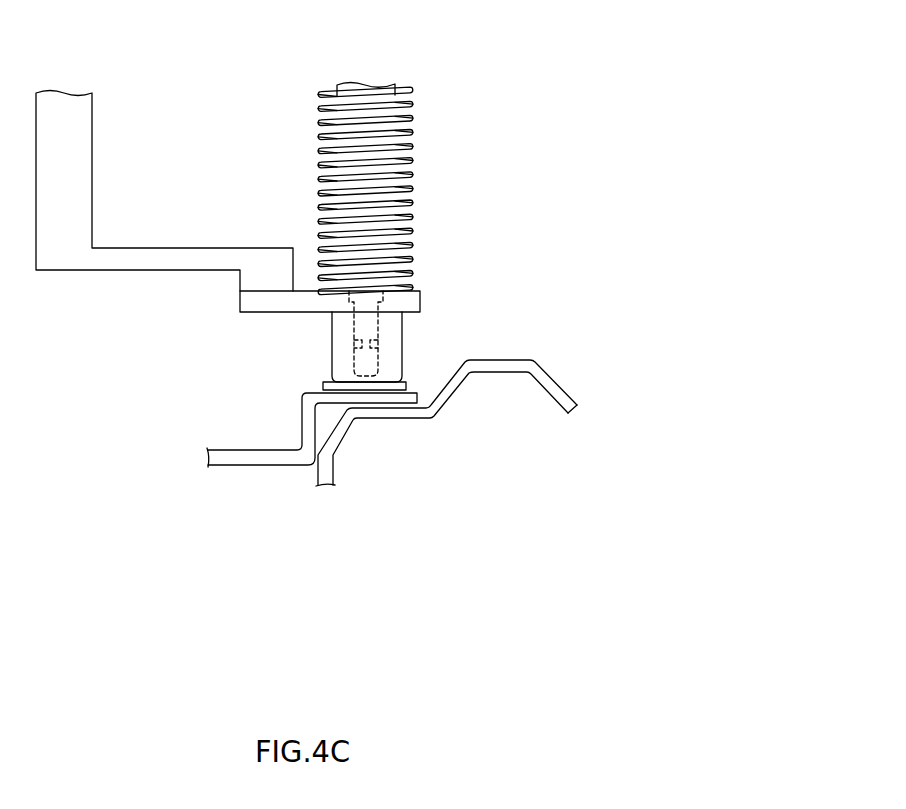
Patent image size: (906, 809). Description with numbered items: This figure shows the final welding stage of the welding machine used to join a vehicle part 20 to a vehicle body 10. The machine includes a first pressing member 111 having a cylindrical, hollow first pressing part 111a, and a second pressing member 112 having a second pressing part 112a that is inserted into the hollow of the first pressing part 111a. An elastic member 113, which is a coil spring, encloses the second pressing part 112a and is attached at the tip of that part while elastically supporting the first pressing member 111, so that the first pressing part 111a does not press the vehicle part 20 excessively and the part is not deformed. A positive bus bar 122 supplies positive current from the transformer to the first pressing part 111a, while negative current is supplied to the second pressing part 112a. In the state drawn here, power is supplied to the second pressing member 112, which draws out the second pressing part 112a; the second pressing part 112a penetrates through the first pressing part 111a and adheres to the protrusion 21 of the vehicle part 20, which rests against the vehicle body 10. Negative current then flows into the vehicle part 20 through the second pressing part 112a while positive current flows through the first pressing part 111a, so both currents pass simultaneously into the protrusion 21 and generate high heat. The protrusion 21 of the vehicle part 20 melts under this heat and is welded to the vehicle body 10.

The vehicle body 10 is at (428, 412).
The vehicle part 20 is at (303, 425).
The protrusion 21 is at (327, 384).
The first pressing member 111 is at (418, 302).
The first pressing part 111a is at (404, 333).
The second pressing member 112 is at (367, 88).
The second pressing part 112a is at (380, 341).
The elastic member 113 is at (414, 160).
The positive bus bar 122 is at (70, 262).